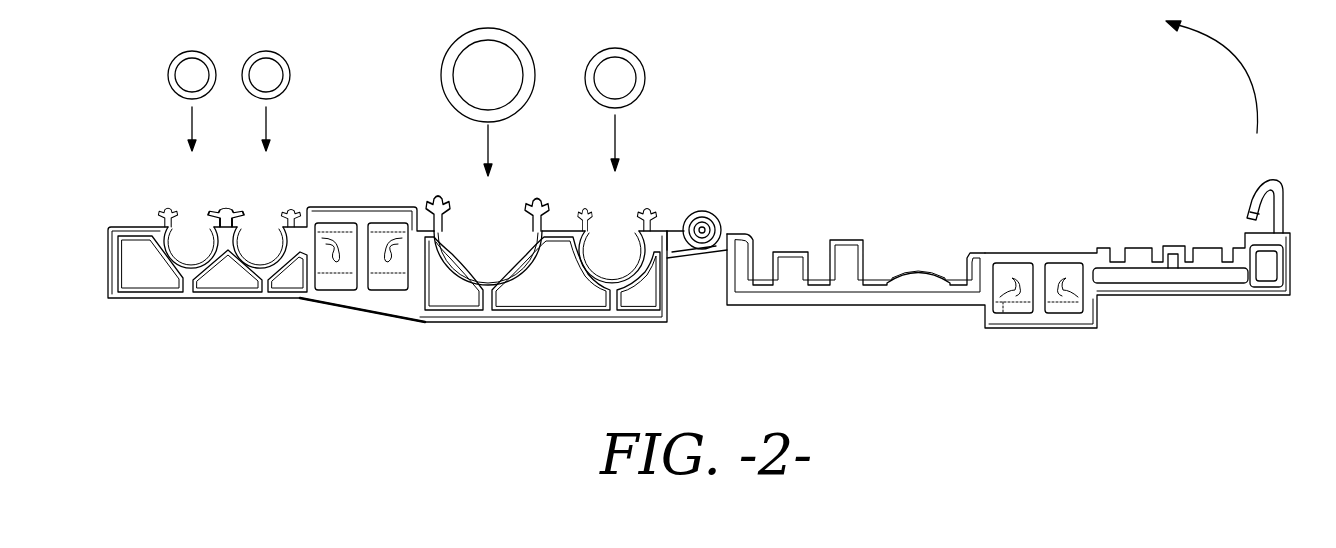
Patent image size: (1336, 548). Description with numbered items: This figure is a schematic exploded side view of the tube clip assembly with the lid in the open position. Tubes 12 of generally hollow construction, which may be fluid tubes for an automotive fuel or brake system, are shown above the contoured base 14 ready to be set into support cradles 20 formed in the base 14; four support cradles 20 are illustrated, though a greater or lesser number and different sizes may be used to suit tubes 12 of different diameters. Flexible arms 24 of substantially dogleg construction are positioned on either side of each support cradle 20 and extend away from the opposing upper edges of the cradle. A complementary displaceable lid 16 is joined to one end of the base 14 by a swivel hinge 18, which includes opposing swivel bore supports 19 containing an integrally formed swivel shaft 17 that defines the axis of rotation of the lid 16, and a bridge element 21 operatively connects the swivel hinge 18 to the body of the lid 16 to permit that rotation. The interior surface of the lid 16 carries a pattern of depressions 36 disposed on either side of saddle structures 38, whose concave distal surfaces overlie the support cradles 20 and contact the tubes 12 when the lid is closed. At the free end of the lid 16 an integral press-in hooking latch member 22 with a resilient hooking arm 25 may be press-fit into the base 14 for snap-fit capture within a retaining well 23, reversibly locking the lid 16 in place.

The tubes 12 is at (254, 50).
The contoured base 14 is at (357, 310).
The displaceable lid 16 is at (1026, 252).
The swivel shaft 17 is at (676, 218).
The swivel hinge 18 is at (701, 211).
The swivel bore supports 19 is at (669, 226).
The support cradles 20 is at (626, 254).
The bridge element 21 is at (716, 262).
The hooking latch member 22 is at (1281, 183).
The retaining well 23 is at (135, 262).
The flexible arms 24 is at (163, 212).
The resilient hooking arm 25 is at (1250, 208).
The depressions 36 is at (763, 275).
The saddle structures 38 is at (793, 252).